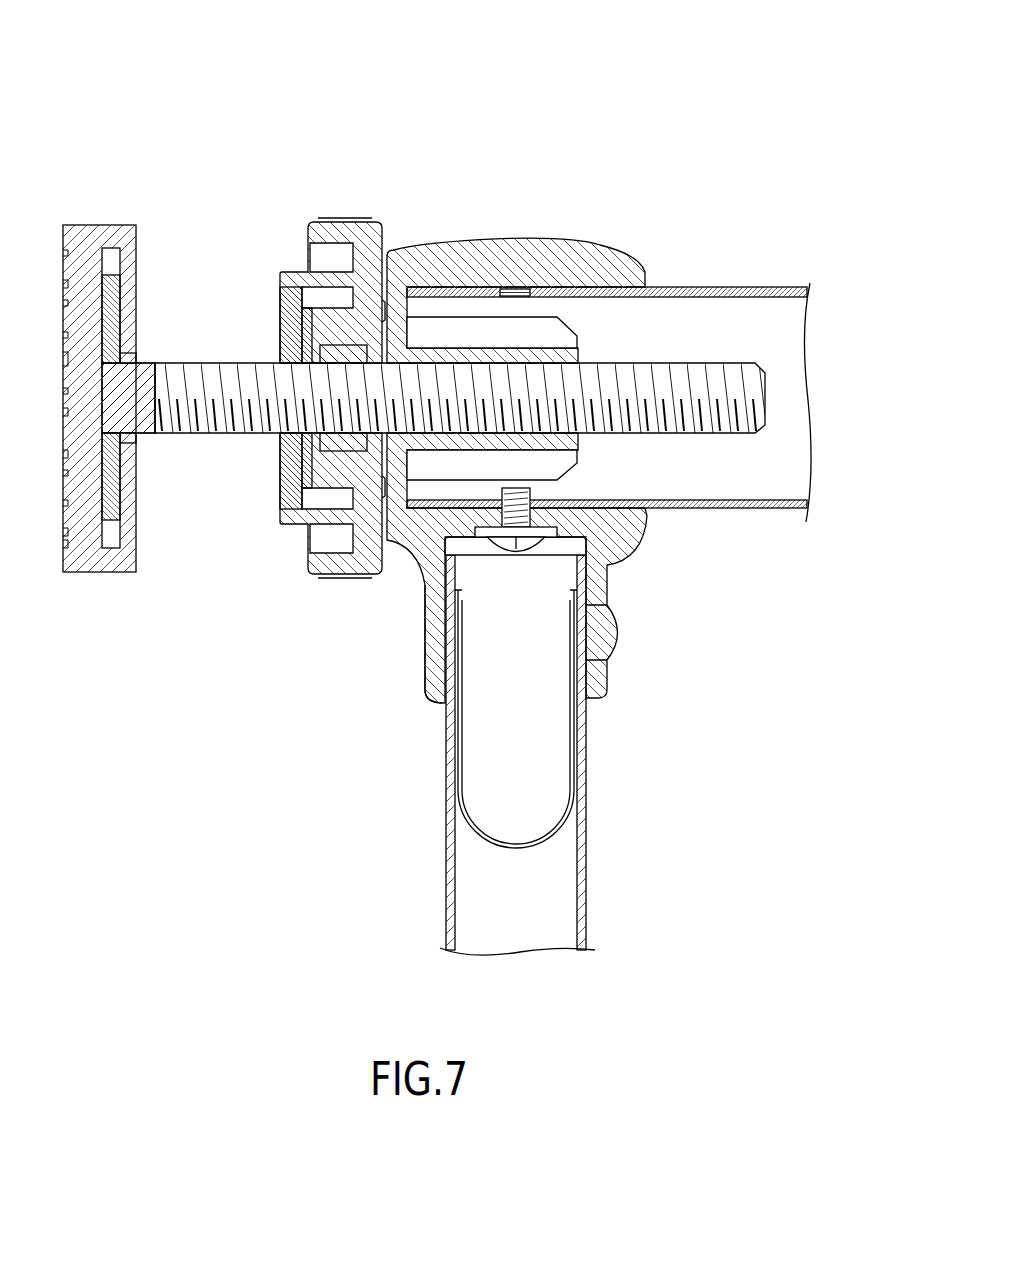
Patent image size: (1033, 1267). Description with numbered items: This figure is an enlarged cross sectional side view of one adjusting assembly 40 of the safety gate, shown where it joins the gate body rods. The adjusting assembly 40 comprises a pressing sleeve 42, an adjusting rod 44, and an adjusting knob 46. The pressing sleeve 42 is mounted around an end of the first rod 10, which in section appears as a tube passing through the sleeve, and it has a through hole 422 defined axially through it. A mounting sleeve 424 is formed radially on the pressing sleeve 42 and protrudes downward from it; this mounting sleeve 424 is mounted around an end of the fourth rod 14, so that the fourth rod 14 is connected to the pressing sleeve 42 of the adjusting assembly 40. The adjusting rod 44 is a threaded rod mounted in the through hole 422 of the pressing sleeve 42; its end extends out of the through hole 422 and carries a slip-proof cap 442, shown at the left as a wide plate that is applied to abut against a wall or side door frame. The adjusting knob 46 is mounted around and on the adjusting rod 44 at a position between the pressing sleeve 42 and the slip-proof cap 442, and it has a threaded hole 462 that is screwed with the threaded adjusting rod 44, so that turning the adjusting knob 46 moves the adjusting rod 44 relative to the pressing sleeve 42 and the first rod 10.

The first rod 10 is at (742, 280).
The fourth rod 14 is at (580, 858).
The adjusting assembly 40 is at (598, 100).
The pressing sleeve 42 is at (493, 218).
The through hole 422 is at (563, 372).
The mounting sleeve 424 is at (437, 632).
The adjusting rod 44 is at (186, 462).
The slip-proof cap 442 is at (83, 555).
The adjusting knob 46 is at (290, 222).
The threaded hole 462 is at (343, 365).